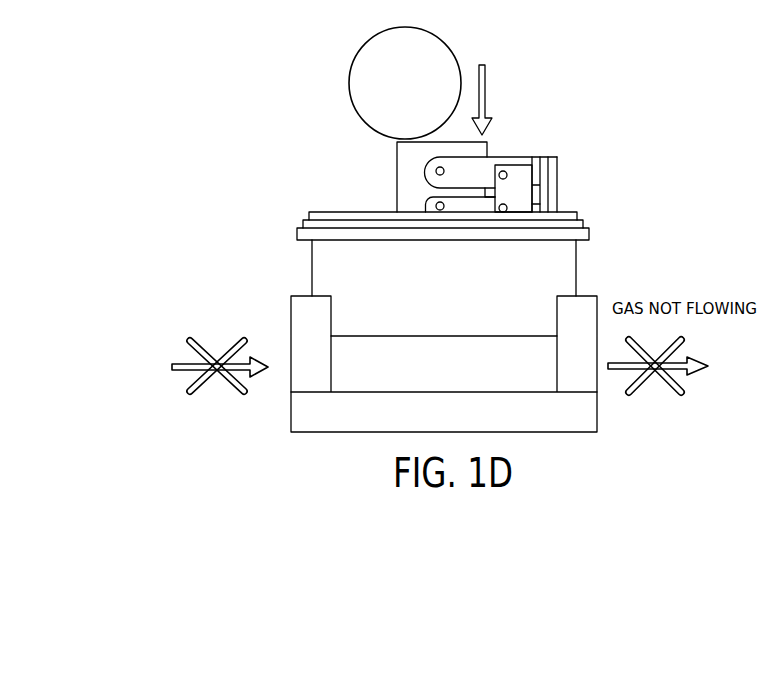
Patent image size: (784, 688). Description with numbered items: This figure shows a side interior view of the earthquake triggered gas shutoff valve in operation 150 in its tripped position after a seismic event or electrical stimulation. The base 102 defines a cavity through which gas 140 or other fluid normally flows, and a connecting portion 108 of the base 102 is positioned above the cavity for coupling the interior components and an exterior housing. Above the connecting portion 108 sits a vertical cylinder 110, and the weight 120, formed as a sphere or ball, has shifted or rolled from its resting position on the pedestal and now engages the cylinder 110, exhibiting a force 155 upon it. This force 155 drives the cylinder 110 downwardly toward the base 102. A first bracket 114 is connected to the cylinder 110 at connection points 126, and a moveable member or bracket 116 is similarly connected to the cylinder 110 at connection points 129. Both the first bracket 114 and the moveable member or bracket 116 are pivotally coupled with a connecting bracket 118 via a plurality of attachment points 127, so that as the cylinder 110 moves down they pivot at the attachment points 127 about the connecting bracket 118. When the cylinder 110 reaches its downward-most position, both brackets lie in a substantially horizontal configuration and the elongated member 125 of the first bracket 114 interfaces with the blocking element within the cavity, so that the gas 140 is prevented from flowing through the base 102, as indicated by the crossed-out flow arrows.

The base 102 is at (291, 316).
The connecting portion 108 is at (297, 236).
The vertical cylinder 110 is at (407, 164).
The first bracket 114 is at (539, 168).
The moveable member or bracket 116 is at (462, 206).
The connecting bracket 118 is at (507, 172).
The weight 120 is at (432, 49).
The elongated member 125 is at (538, 204).
The connection points 126 is at (438, 170).
The attachment points 127 is at (506, 176).
The connection points 129 is at (428, 207).
The gas 140 is at (174, 368).
The operation 150 is at (296, 76).
The force 155 is at (487, 89).